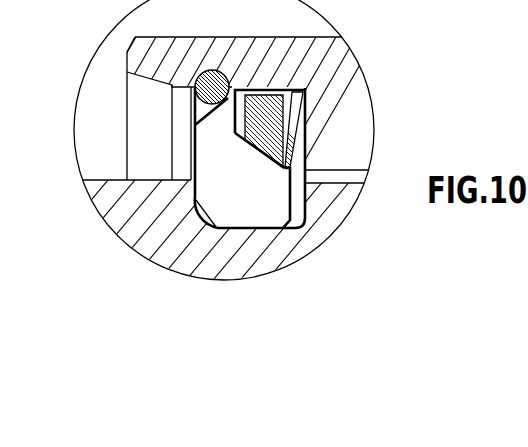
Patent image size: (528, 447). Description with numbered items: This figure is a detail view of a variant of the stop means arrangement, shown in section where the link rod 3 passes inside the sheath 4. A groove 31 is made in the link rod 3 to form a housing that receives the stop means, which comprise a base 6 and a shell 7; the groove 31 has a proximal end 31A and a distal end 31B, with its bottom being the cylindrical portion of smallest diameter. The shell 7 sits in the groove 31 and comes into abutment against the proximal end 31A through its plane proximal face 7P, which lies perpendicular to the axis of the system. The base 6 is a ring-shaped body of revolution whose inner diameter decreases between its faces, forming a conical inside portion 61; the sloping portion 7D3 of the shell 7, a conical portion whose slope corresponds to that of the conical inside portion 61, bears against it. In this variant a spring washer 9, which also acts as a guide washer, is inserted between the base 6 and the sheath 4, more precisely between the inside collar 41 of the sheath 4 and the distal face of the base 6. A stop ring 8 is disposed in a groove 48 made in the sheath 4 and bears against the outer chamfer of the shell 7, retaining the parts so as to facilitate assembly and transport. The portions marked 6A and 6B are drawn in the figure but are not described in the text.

The link rod 3 is at (160, 231).
The sheath 4 is at (335, 75).
The base 6 is at (262, 132).
The casing portion of reinforcing member 6A is at (238, 89).
The inclined portion of reinforcing member 6B is at (292, 90).
The shell 7 is at (245, 189).
The sloping portion 7D3 is at (272, 172).
The proximal face 7P is at (187, 138).
The stop ring 8 is at (197, 74).
The spring washer 9 is at (300, 116).
The groove 31 is at (223, 232).
The proximal end of the groove 31A is at (180, 183).
The distal end of the groove 31B is at (305, 194).
The inside collar 41 is at (348, 155).
The groove 48 is at (224, 70).
The conical inside portion 61 is at (243, 137).